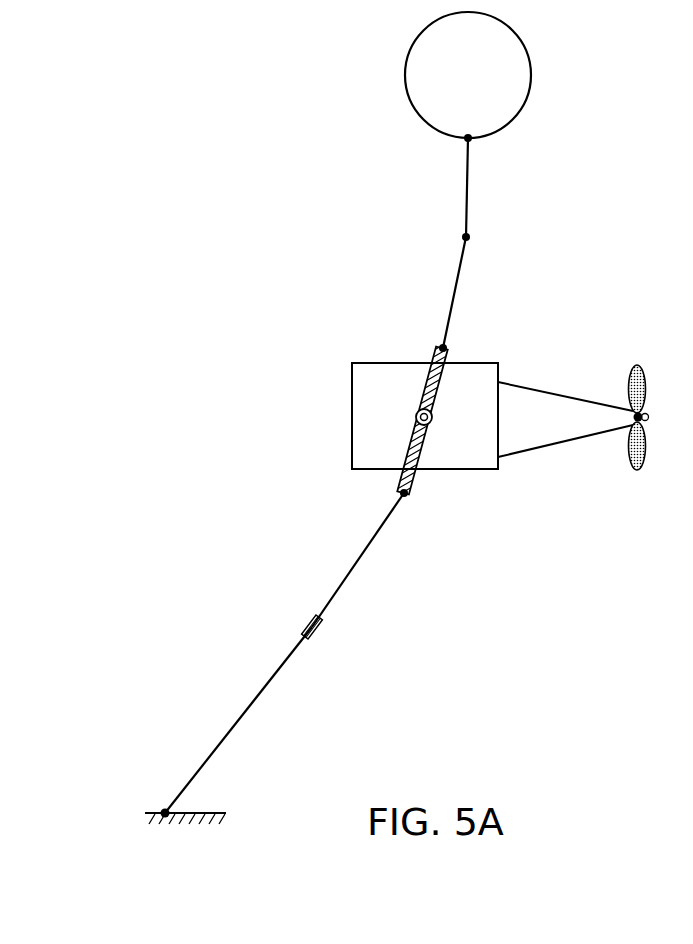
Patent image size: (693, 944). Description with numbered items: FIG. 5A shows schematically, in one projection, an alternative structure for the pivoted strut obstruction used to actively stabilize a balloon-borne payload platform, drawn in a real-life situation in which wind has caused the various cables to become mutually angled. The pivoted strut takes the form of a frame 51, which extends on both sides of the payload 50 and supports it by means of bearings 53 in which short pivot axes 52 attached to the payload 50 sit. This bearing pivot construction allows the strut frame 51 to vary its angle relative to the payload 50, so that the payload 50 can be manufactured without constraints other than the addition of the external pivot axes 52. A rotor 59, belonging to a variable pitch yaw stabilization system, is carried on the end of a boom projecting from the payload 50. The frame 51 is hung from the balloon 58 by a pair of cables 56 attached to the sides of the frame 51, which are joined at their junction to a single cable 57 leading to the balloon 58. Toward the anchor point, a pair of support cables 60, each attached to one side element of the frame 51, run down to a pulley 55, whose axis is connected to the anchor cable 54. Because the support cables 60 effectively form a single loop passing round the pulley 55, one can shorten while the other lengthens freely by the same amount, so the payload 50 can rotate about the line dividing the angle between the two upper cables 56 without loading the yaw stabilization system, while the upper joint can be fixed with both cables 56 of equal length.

The payload 50 is at (352, 380).
The frame 51 is at (450, 357).
The pivot axes 52 is at (416, 417).
The bearings 53 is at (431, 421).
The anchor cable 54 is at (257, 690).
The pulley 55 is at (304, 625).
The cables 56 is at (452, 300).
The single cable 57 is at (467, 195).
The balloon 58 is at (531, 72).
The rotor 59 is at (637, 365).
The support cables 60 is at (353, 561).